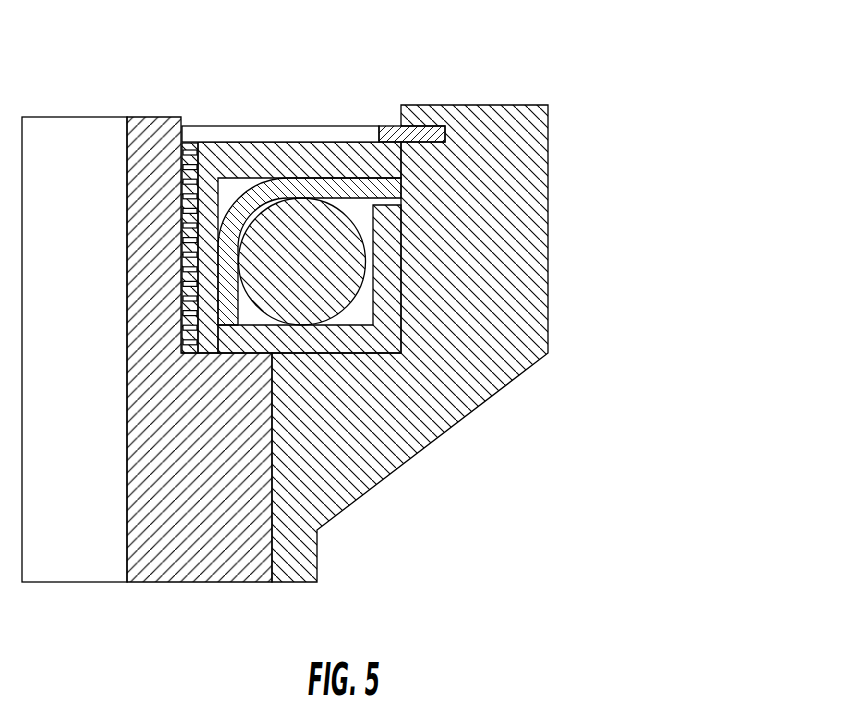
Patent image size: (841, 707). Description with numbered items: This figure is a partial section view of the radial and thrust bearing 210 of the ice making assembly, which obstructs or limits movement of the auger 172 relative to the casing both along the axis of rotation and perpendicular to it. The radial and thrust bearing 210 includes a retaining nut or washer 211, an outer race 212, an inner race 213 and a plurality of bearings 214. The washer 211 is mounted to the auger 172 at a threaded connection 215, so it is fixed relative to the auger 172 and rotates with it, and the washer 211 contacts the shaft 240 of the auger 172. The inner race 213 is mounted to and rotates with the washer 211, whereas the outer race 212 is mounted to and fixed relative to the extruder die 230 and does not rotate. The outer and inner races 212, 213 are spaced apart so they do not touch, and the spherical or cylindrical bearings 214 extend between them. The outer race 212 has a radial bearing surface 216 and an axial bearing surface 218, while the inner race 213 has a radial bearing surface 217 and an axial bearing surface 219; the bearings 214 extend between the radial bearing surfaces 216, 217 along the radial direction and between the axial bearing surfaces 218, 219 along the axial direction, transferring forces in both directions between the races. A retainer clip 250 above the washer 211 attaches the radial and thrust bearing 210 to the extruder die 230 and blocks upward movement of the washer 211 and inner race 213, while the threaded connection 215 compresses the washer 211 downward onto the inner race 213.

The auger 172 is at (158, 547).
The radial and thrust bearing 210 is at (396, 98).
The retaining nut or washer 211 is at (248, 147).
The outer race 212 is at (335, 300).
The inner race 213 is at (310, 187).
The bearings 214 is at (398, 312).
The threaded connection 215 is at (191, 140).
The radial bearing surface 216 is at (358, 238).
The radial bearing surface 217 is at (252, 288).
The axial bearing surface 218 is at (262, 318).
The axial bearing surface 219 is at (365, 203).
The extruder die 230 is at (548, 186).
The shaft 240 is at (142, 194).
The retainer clip 250 is at (357, 126).